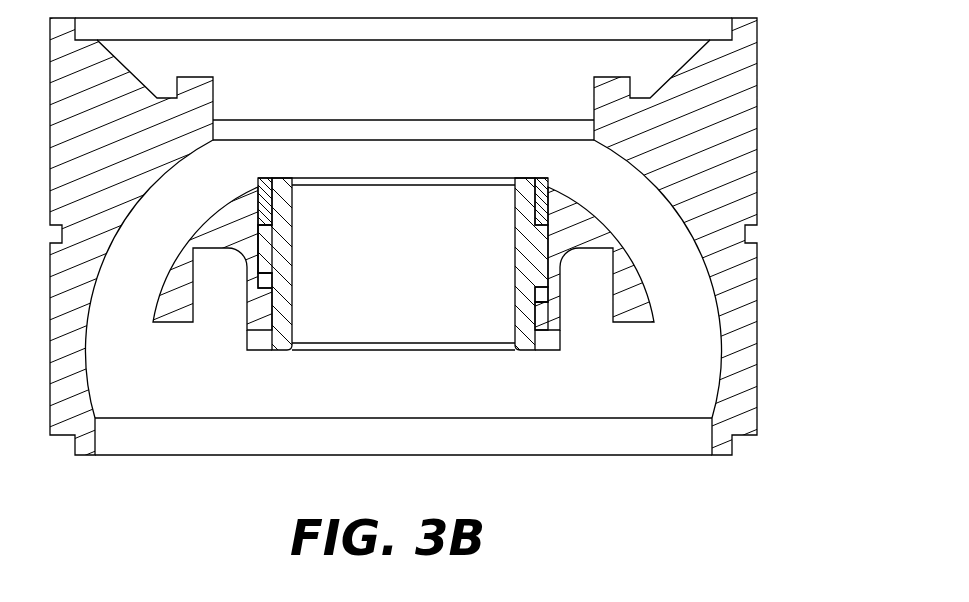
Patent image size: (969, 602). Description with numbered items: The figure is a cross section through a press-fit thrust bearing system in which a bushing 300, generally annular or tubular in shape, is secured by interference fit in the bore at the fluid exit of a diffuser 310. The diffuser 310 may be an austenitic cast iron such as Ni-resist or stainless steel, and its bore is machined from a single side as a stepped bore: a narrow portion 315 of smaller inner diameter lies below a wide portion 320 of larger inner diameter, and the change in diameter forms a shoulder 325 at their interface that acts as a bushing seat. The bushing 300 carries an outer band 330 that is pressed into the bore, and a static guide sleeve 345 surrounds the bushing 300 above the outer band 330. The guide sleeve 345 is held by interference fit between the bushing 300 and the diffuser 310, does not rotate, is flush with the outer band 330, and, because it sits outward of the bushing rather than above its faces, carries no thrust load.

The bushing 300 is at (298, 242).
The diffuser 310 is at (725, 86).
The narrow portion 315 is at (551, 311).
The wide portion 320 is at (572, 238).
The shoulder 325 is at (536, 287).
The outer band 330 is at (265, 258).
The static guide sleeve 345 is at (540, 200).